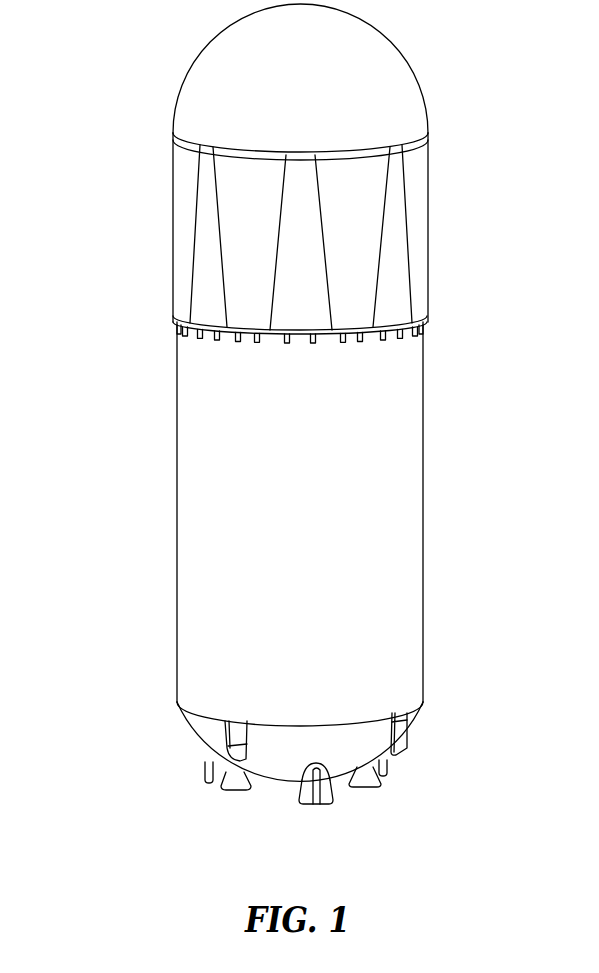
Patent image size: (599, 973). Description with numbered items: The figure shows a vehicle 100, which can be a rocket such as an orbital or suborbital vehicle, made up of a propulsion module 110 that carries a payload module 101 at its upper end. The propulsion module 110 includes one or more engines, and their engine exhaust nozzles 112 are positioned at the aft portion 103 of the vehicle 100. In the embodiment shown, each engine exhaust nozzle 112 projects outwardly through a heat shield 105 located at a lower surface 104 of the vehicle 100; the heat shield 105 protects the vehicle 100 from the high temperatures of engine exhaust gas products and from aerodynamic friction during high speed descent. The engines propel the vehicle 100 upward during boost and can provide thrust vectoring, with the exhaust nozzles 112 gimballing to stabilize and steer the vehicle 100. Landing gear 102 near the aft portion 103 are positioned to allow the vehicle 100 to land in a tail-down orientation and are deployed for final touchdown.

The vehicle 100 is at (125, 135).
The payload module 101 is at (393, 50).
The propulsion module 110 is at (423, 389).
The aft portion 103 is at (480, 638).
The lower surface 104 is at (146, 735).
The landing gear 102 is at (225, 740).
The heat shield 105 is at (398, 756).
The engine exhaust nozzle 112 is at (236, 788).